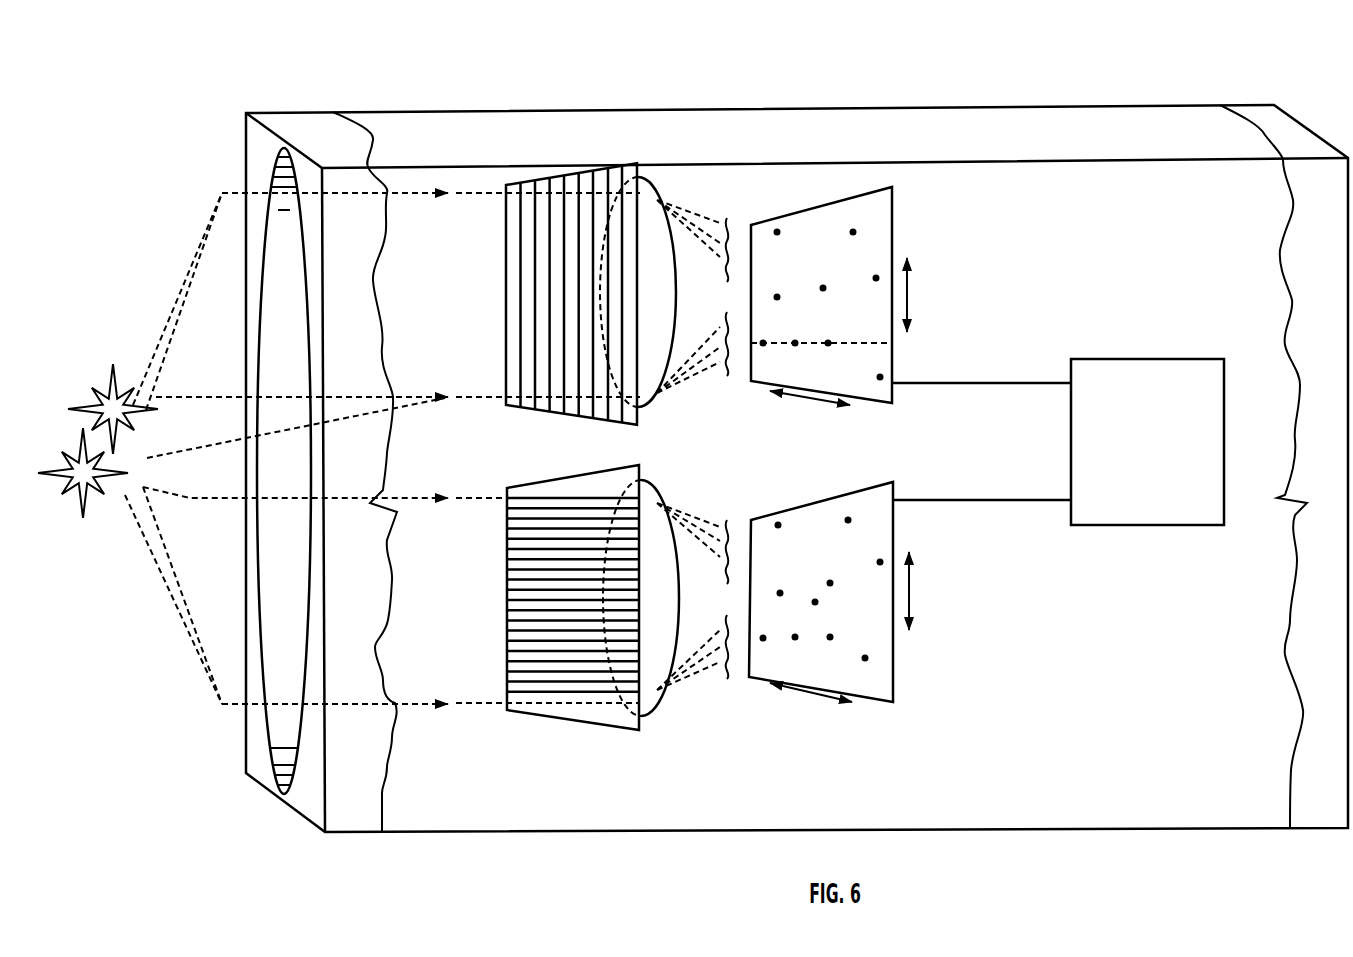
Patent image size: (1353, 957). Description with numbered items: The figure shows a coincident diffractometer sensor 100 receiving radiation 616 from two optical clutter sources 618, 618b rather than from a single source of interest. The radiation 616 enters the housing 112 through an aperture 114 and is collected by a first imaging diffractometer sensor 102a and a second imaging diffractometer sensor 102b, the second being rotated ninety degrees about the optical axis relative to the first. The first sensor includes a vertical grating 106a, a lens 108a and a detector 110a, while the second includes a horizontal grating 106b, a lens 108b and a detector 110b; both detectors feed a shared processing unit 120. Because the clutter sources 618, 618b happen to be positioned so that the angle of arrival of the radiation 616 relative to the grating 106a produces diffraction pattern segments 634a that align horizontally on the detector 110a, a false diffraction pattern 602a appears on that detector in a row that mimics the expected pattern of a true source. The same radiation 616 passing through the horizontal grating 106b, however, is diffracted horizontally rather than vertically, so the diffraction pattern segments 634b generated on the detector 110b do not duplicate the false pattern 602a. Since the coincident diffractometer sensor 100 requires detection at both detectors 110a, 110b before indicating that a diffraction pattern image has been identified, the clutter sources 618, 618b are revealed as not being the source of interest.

The coincident diffractometer sensor 100 is at (914, 58).
The first imaging diffractometer sensor 102a is at (553, 90).
The second imaging diffractometer sensor 102b is at (598, 789).
The first grating 106a is at (523, 182).
The second grating 106b is at (593, 722).
The lens 108a is at (658, 200).
The lens 108b is at (658, 702).
The first detector 110a is at (859, 196).
The second detector 110b is at (893, 690).
The housing 112 is at (1068, 829).
The aperture 114 is at (268, 727).
The processing unit 120 is at (1224, 398).
The false diffraction pattern 602a is at (884, 357).
The radiation 616 is at (388, 194).
The optical clutter source 618 is at (114, 373).
The optical clutter source 618b is at (103, 490).
The diffraction pattern segments 634a is at (853, 230).
The diffraction pattern segments 634b is at (863, 660).